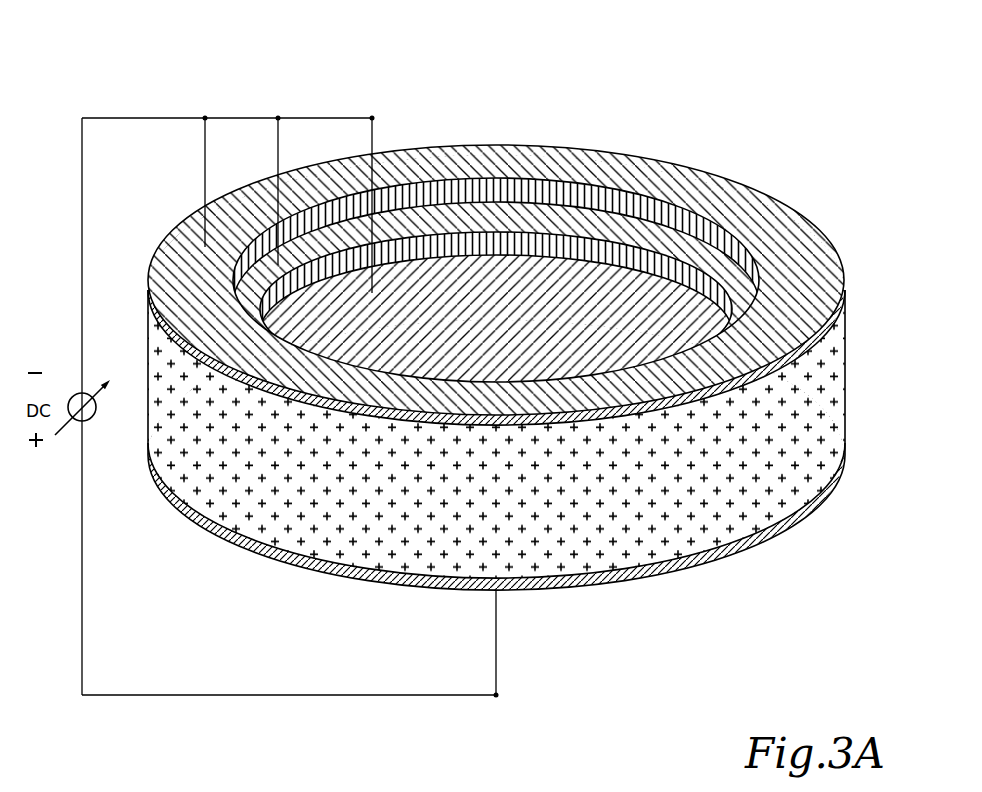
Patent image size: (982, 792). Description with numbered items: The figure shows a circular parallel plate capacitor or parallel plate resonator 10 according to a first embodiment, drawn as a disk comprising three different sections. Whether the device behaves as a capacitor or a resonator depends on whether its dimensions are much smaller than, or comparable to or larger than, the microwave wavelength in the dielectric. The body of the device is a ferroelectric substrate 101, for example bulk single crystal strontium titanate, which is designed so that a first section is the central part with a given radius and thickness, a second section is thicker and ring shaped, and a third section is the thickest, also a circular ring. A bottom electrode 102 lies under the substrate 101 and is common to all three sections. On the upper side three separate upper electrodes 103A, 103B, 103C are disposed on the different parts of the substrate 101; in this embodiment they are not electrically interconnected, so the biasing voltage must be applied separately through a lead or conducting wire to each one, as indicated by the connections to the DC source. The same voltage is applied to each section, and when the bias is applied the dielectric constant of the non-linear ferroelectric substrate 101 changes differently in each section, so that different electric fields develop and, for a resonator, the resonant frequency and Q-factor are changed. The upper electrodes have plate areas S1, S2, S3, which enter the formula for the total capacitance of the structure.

The disk shaped capacitor or parallel plate resonator 10 is at (491, 396).
The ferroelectric substrate 101 is at (658, 507).
The bottom electrode 102 is at (624, 578).
The upper electrode 103A is at (547, 210).
The upper electrode 103B is at (653, 237).
The upper electrode 103C is at (786, 246).
The plate area S1 is at (491, 396).
The plate area S2 is at (491, 396).
The plate area S3 is at (491, 396).